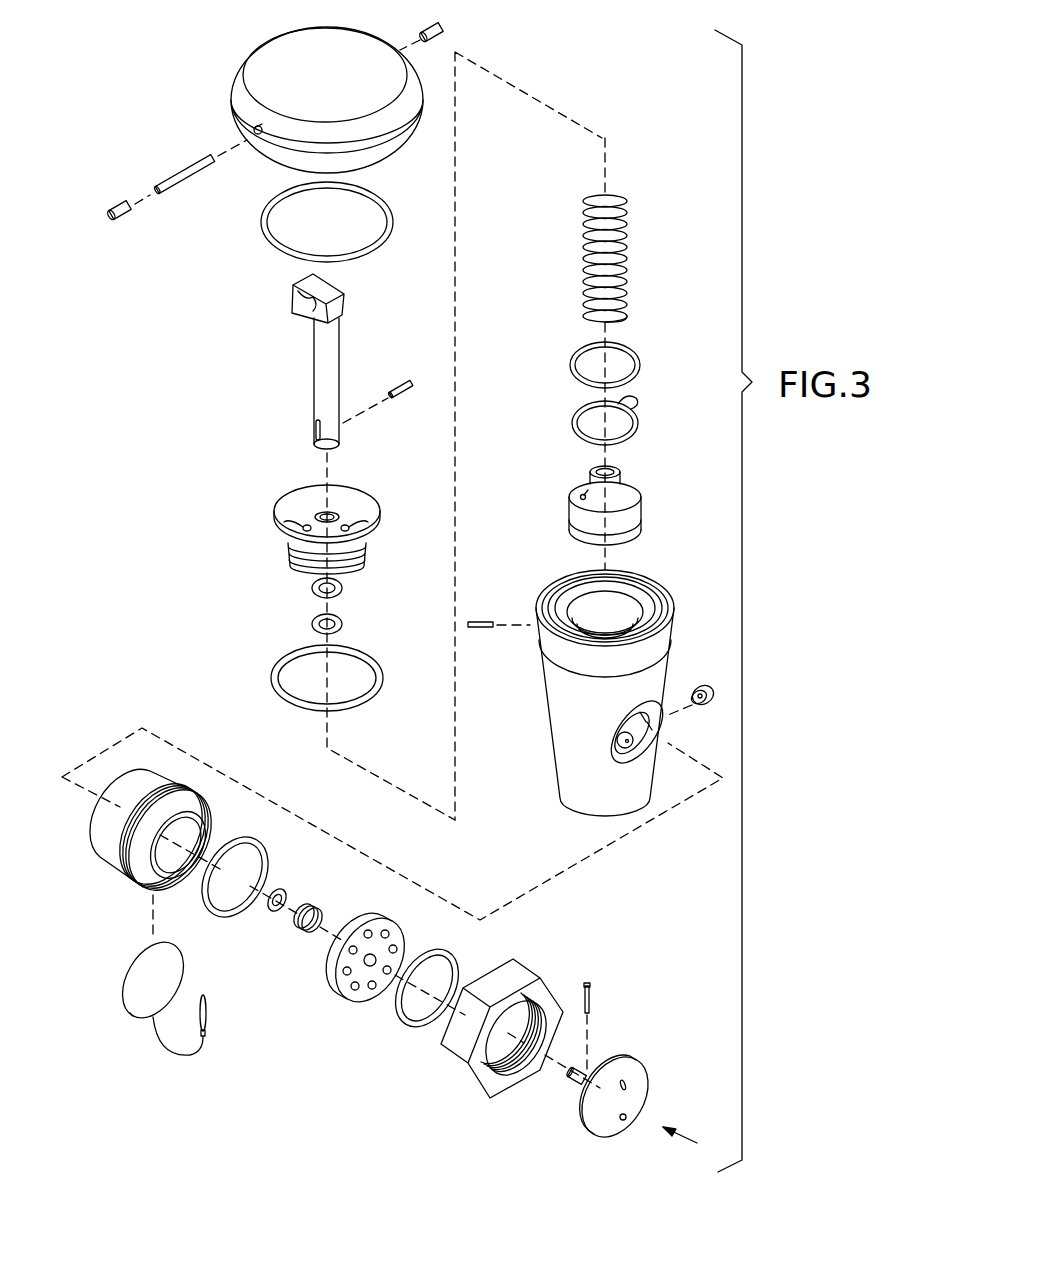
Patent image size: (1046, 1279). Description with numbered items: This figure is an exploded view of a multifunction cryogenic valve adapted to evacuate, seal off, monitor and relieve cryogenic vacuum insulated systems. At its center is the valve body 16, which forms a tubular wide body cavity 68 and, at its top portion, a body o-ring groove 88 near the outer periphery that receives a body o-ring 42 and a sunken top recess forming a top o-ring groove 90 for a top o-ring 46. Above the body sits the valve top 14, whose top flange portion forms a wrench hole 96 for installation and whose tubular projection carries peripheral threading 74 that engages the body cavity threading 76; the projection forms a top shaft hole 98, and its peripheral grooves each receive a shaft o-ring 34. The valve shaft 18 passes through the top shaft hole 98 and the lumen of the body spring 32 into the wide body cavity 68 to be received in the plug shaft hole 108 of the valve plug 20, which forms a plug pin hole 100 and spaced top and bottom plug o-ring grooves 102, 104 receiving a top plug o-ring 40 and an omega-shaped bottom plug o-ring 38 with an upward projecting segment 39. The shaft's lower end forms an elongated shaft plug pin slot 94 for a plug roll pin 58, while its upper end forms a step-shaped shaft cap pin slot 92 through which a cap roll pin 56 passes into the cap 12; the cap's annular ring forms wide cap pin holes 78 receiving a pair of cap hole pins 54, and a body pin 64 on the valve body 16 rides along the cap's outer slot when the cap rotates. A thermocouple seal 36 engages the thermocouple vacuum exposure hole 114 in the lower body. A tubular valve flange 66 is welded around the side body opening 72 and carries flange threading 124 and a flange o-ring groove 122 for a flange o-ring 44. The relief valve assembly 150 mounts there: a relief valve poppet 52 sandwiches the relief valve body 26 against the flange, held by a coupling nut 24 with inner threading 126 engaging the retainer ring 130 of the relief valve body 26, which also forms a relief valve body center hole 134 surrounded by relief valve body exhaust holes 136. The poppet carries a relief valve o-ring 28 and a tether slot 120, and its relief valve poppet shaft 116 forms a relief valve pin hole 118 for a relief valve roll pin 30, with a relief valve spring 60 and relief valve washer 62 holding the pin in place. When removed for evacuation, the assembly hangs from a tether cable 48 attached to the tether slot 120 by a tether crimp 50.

The cap 12 is at (291, 44).
The valve top 14 is at (281, 502).
The valve body 16 is at (550, 713).
The valve shaft 18 is at (340, 352).
The valve plug 20 is at (631, 490).
The coupling nut 24 is at (515, 966).
The relief valve body 26 is at (400, 950).
The relief valve o-ring 28 is at (415, 1012).
The relief valve roll pin 30 is at (592, 998).
The body spring 32 is at (617, 200).
The shaft o-ring 34 is at (312, 588).
The thermocouple seal 36 is at (705, 686).
The bottom plug o-ring 38 is at (637, 414).
The upward projecting segment 39 is at (631, 400).
The top plug o-ring 40 is at (575, 352).
The body o-ring 42 is at (385, 200).
The flange o-ring 44 is at (266, 858).
The top o-ring 46 is at (285, 666).
The tether cable 48 is at (130, 968).
The tether crimp 50 is at (152, 1020).
The relief valve poppet 52 is at (640, 1070).
The cap hole pins 54 is at (448, 30).
The cap roll pin 56 is at (205, 166).
The plug roll pin 58 is at (400, 383).
The relief valve spring 60 is at (314, 908).
The relief valve washer 62 is at (272, 910).
The body pin 64 is at (488, 622).
The valve flange 66 is at (126, 850).
The wide body cavity 68 is at (626, 638).
The side body opening 72 is at (656, 730).
The peripheral threading 74 is at (355, 562).
The body cavity threading 76 is at (585, 600).
The wide cap pin holes 78 is at (264, 132).
The body o-ring groove 88 is at (660, 594).
The top o-ring groove 90 is at (665, 616).
The shaft cap pin slot 92 is at (300, 298).
The shaft plug pin slot 94 is at (315, 430).
The wrench hole 96 is at (303, 528).
The top shaft hole 98 is at (336, 516).
The plug pin hole 100 is at (573, 504).
The top plug o-ring groove 102 is at (644, 524).
The bottom plug o-ring groove 104 is at (640, 534).
The plug shaft hole 108 is at (584, 468).
The thermocouple vacuum exposure hole 114 is at (620, 740).
The relief valve poppet shaft 116 is at (576, 1082).
The relief valve pin hole 118 is at (612, 1066).
The tether slot 120 is at (636, 1116).
The flange o-ring groove 122 is at (206, 814).
The flange threading 124 is at (140, 878).
The inner threading 126 is at (545, 1010).
The retainer ring 130 is at (340, 958).
The relief valve body center hole 134 is at (384, 934).
The relief valve body exhaust holes 136 is at (351, 986).
The relief valve assembly 150 is at (703, 1145).